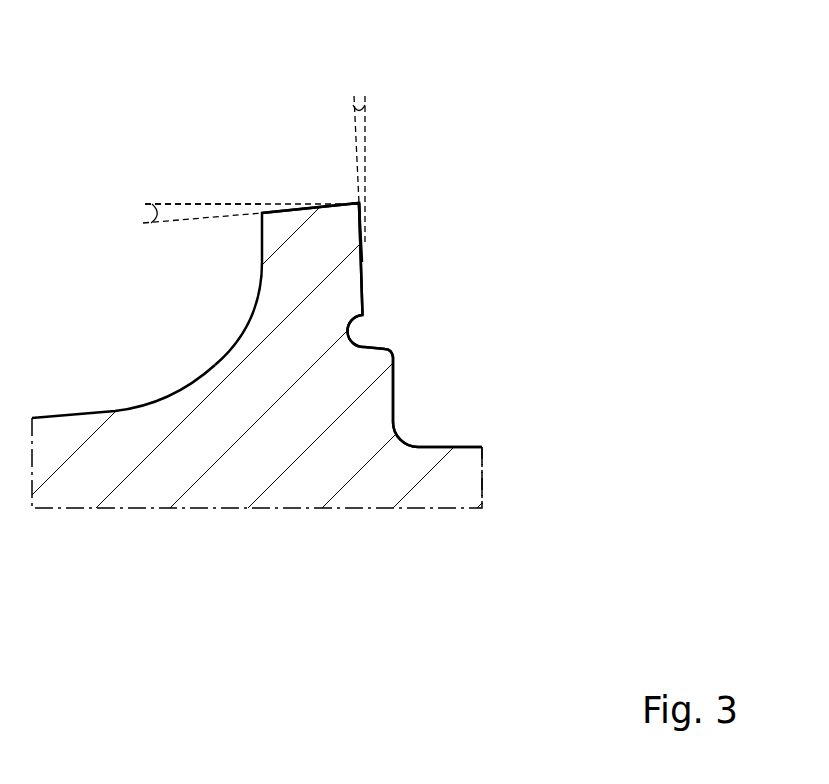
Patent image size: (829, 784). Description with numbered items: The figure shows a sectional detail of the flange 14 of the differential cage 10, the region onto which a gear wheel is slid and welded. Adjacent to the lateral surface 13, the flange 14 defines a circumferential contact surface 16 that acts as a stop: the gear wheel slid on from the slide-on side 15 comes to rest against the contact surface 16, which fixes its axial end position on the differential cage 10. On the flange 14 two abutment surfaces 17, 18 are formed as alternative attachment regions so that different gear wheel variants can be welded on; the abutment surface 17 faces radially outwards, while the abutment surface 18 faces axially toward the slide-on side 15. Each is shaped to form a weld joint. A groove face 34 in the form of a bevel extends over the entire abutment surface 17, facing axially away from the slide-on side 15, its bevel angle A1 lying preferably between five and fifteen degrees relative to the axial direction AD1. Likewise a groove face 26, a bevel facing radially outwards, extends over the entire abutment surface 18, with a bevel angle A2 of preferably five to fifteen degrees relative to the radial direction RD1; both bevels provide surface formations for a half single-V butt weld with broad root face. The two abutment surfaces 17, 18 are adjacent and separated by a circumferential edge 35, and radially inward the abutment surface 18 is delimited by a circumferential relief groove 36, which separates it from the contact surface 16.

The differential cage 10 is at (90, 510).
The lateral surface 13 is at (443, 446).
The flange 14 is at (290, 280).
The slide-on side 15 is at (496, 457).
The contact surface 16 is at (394, 380).
The abutment surface 17 is at (312, 204).
The abutment surface 18 is at (366, 271).
The groove face 26 is at (364, 240).
The groove face 34 is at (277, 212).
The circumferential edge 35 is at (361, 198).
The relief groove 36 is at (366, 330).
The radial direction RD1 is at (366, 134).
The axial direction AD1 is at (168, 203).
The bevel angle A1 is at (152, 216).
The bevel angle A2 is at (357, 100).